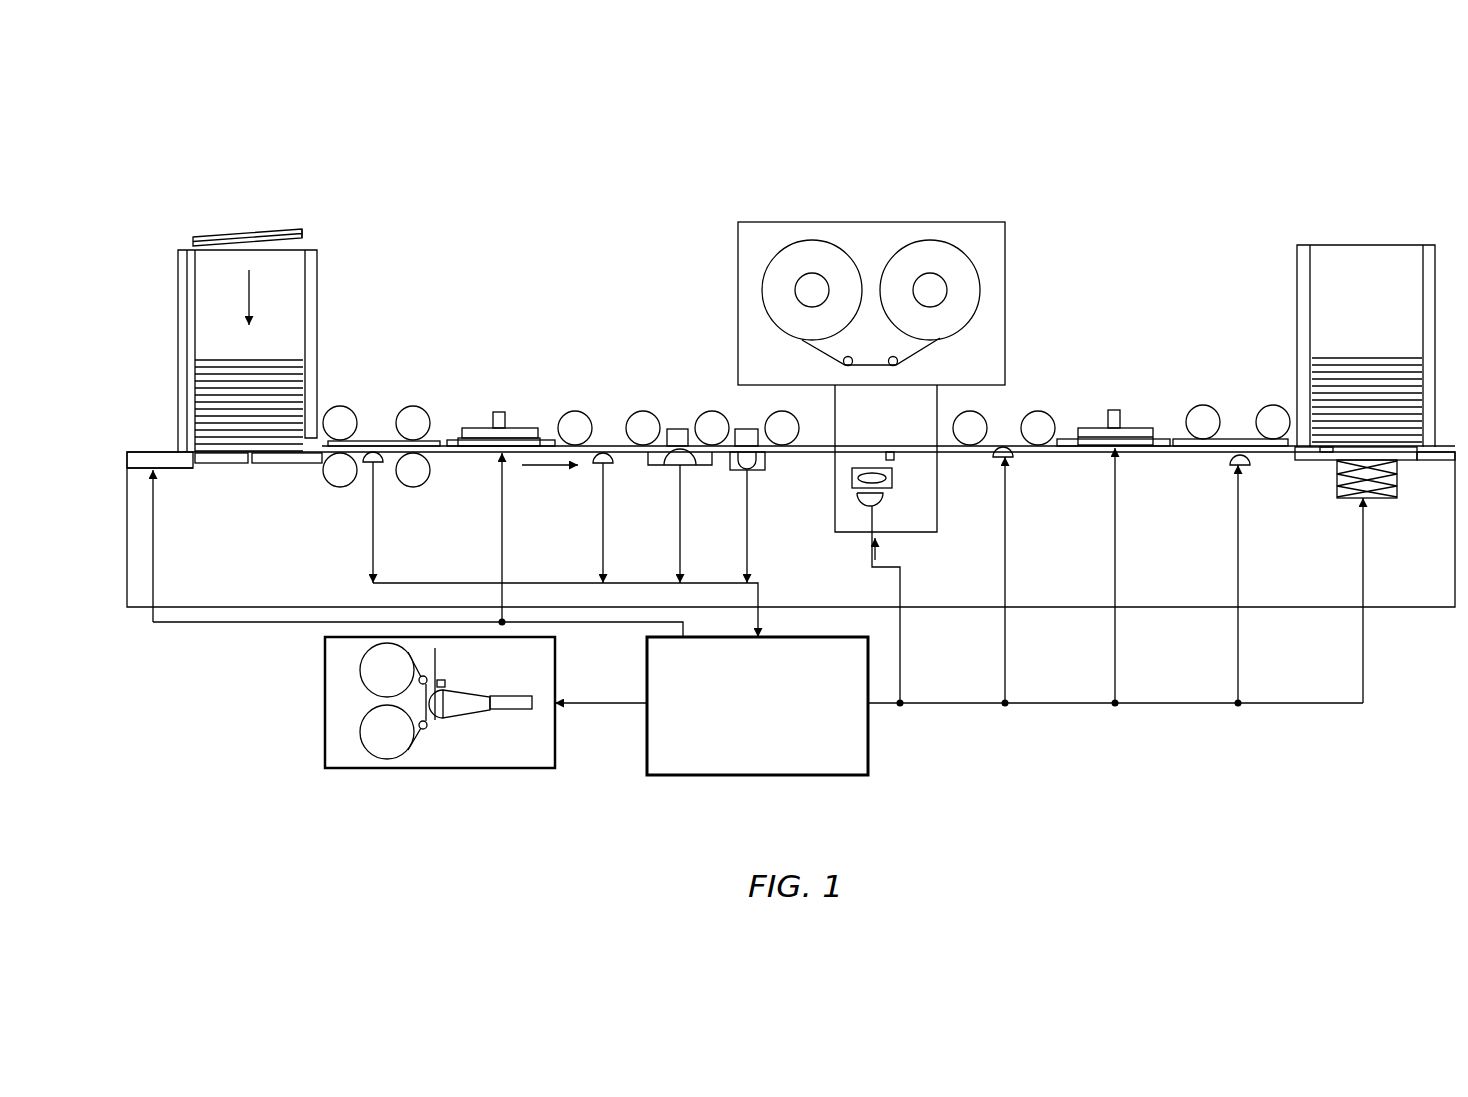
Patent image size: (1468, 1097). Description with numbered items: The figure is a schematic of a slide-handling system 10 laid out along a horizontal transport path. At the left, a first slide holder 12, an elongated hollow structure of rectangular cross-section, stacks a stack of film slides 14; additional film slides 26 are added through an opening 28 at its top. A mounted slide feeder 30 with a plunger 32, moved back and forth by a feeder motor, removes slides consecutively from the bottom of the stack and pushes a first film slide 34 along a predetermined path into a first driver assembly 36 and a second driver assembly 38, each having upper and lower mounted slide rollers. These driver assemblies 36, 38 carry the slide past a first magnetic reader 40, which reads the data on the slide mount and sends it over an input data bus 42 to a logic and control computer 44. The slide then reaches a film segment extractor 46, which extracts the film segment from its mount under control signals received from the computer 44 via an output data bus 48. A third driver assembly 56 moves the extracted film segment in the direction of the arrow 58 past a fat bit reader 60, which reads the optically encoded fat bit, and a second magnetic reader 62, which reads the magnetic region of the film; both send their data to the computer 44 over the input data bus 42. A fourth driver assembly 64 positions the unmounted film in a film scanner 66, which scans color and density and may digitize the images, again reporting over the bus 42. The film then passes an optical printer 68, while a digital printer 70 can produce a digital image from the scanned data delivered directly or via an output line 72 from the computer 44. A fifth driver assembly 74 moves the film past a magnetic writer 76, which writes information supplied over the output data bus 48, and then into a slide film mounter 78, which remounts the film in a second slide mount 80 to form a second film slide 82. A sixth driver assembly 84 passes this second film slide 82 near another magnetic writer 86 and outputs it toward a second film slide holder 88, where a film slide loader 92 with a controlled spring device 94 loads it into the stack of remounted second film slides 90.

The system 10 is at (368, 135).
The first slide holder 12 is at (320, 292).
The film slides 14 is at (200, 378).
The additional film slides 26 is at (214, 232).
The opening 28 is at (313, 242).
The mounted slide feeder 30 is at (173, 468).
The plunger 32 is at (220, 455).
The first film slide 34 is at (275, 455).
The first driver assembly 36 is at (343, 415).
The second driver assembly 38 is at (413, 415).
The first magnetic reader 40 is at (368, 476).
The input data bus 42 is at (446, 583).
The logic and control computer 44 is at (760, 775).
The film segment extractor 46 is at (483, 428).
The output data bus 48 is at (245, 622).
The third driver assembly 56 is at (575, 415).
The arrow 58 is at (545, 467).
The fat bit reader 60 is at (612, 463).
The second magnetic reader 62 is at (675, 428).
The fourth driver assembly 64 is at (782, 412).
The film scanner 66 is at (763, 470).
The optical printer 68 is at (836, 222).
The digital printer 70 is at (448, 768).
The output line 72 is at (605, 703).
The fifth driver assembly 74 is at (1038, 412).
The magnetic writer 76 is at (1010, 460).
The slide film mounter 78 is at (1130, 428).
The second slide mount 80 is at (1135, 449).
The second film slide 82 is at (1330, 451).
The sixth driver assembly 84 is at (1270, 408).
The magnetic writer 86 is at (1245, 465).
The second film slide holder 88 is at (1297, 308).
The stack of remounted second film slides 90 is at (1368, 350).
The film slide loader 92 is at (1380, 498).
The controlled spring device 94 is at (1397, 480).